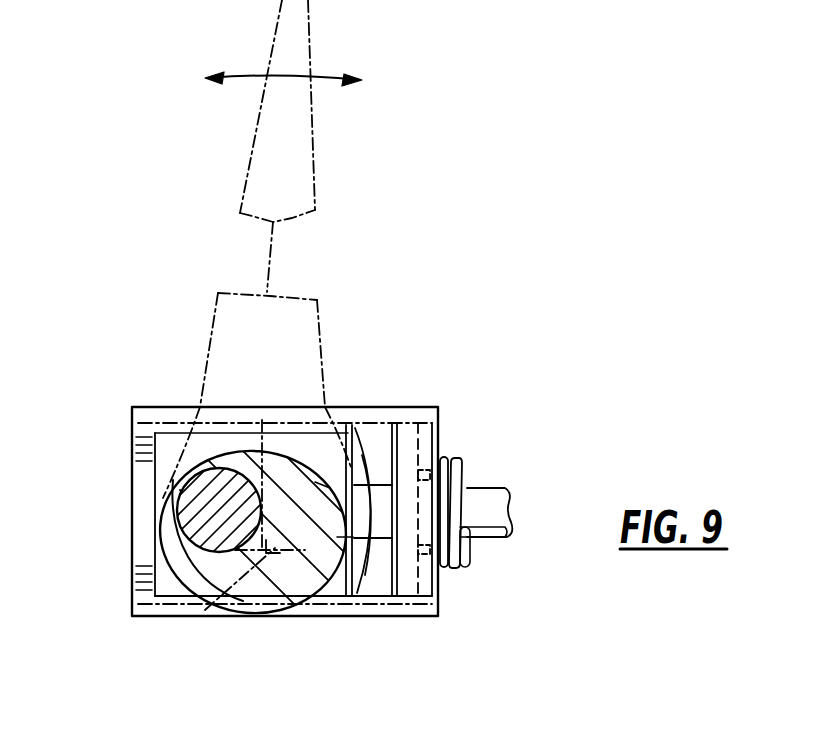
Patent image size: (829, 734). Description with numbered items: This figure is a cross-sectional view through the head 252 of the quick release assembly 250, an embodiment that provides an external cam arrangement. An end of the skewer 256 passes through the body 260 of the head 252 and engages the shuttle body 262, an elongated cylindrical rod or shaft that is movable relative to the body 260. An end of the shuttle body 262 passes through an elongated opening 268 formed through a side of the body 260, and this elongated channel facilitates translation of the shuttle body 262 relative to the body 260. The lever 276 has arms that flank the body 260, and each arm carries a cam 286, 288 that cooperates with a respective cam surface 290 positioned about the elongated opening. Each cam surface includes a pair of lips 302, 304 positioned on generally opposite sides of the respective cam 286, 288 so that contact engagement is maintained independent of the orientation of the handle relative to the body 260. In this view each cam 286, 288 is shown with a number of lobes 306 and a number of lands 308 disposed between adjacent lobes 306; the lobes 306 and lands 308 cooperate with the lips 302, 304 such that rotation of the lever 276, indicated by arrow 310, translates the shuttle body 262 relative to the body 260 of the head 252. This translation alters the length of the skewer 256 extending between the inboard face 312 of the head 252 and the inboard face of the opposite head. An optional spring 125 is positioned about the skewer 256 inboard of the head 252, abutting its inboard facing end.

The spring 125 is at (453, 462).
The quick release assembly 250 is at (537, 50).
The head 252 is at (550, 308).
The skewer 256 is at (483, 488).
The body 260 is at (320, 440).
The shuttle body 262 is at (185, 505).
The elongated opening 268 is at (220, 603).
The lever 276 is at (317, 188).
The cam 286 is at (300, 600).
The cam 288 is at (316, 542).
The cam surface 290 is at (163, 443).
The lip 302 is at (140, 592).
The lip 304 is at (392, 578).
The lobe 306 is at (177, 487).
The land 308 is at (253, 463).
The arrow 310 is at (323, 77).
The inboard face 312 is at (440, 582).